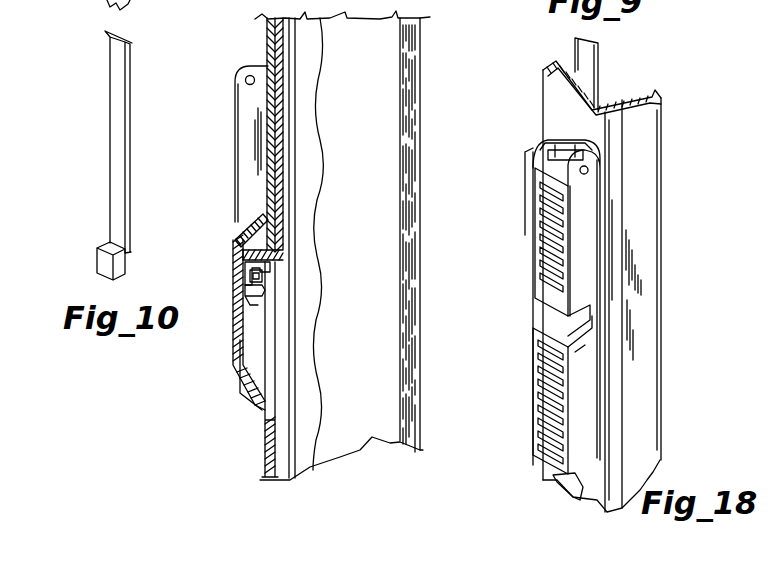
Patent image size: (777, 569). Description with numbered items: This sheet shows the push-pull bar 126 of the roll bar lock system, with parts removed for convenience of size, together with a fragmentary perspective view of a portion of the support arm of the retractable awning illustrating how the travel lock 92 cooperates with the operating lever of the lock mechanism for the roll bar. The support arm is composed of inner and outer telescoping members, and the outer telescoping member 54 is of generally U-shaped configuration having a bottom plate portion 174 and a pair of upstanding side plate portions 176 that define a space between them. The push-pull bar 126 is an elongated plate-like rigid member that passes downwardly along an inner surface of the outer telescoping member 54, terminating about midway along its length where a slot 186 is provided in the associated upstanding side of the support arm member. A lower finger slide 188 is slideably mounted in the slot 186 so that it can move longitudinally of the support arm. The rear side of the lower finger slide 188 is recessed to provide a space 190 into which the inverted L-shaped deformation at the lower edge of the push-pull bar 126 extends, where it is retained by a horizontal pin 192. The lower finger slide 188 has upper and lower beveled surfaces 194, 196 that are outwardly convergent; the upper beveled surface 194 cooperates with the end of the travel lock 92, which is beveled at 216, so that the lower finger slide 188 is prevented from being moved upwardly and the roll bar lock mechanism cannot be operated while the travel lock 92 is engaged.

In FIG. 10, the outer telescoping member 54 is at (393, 203).
In FIG. 18, the outer telescoping member 54 is at (652, 192).
In FIG. 10, the travel lock 92 is at (235, 78).
In FIG. 18, the travel lock 92 is at (600, 243).
In FIG. 10, the strip 126 is at (128, 107).
In FIG. 18, the strip 126 is at (600, 58).
In FIG. 10, the bottom plate portion 174 is at (408, 63).
In FIG. 18, the bottom plate portion 174 is at (648, 142).
In FIG. 18, the side plate portions 176 is at (553, 110).
In FIG. 10, the slot 186 is at (280, 185).
In FIG. 10, the lower finger slide 188 is at (230, 312).
In FIG. 10, the space 190 is at (250, 285).
In FIG. 10, the horizontal pin 192 is at (262, 277).
In FIG. 10, the upper beveled surface 194 is at (238, 218).
In FIG. 18, the upper beveled surface 194 is at (590, 323).
In FIG. 18, the lower beveled surface 196 is at (563, 497).
In FIG. 18, the beveled end 216 is at (590, 307).